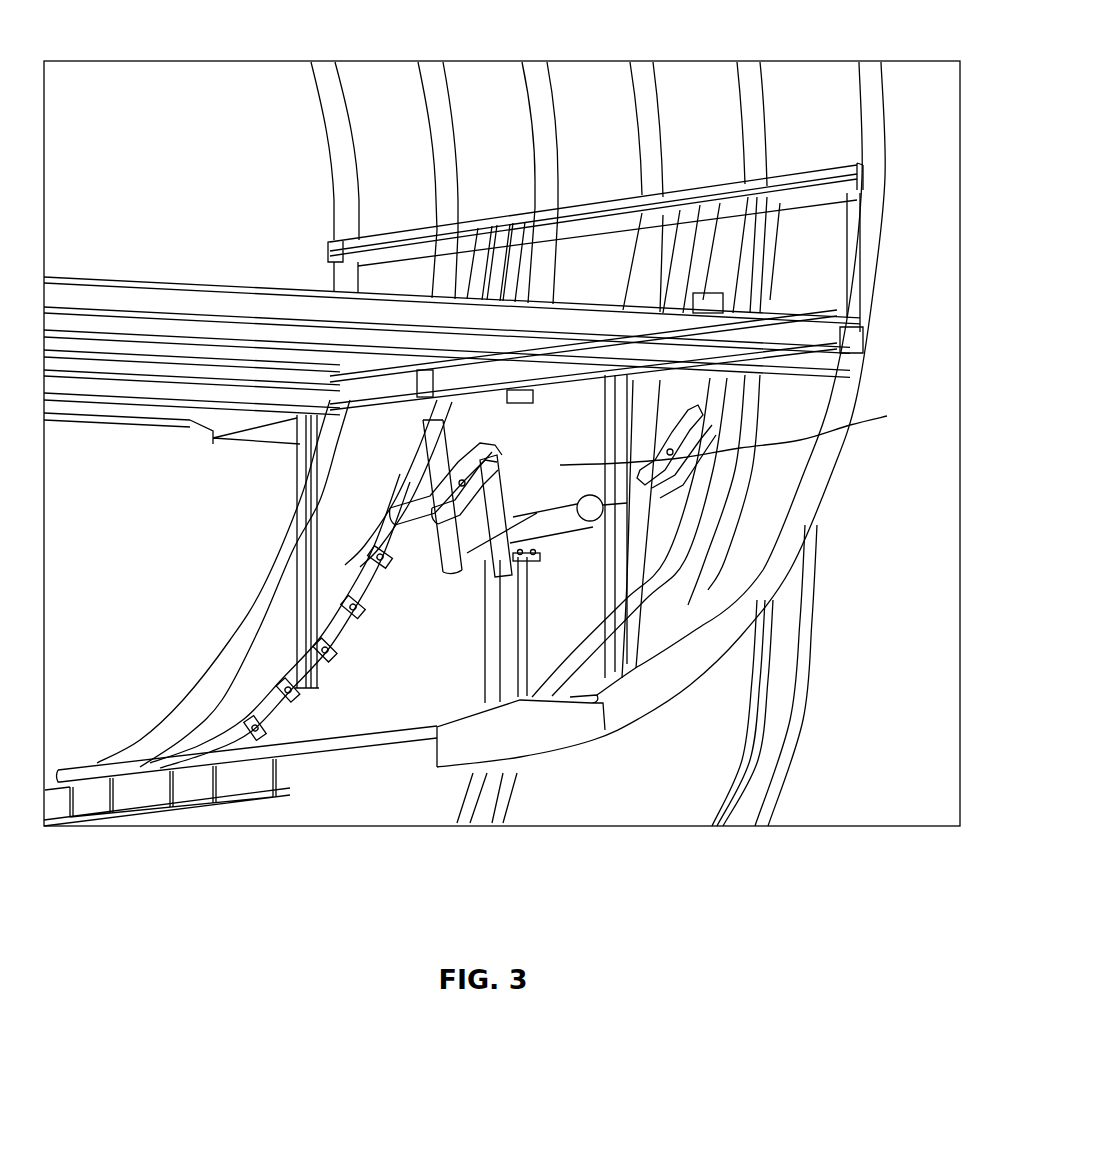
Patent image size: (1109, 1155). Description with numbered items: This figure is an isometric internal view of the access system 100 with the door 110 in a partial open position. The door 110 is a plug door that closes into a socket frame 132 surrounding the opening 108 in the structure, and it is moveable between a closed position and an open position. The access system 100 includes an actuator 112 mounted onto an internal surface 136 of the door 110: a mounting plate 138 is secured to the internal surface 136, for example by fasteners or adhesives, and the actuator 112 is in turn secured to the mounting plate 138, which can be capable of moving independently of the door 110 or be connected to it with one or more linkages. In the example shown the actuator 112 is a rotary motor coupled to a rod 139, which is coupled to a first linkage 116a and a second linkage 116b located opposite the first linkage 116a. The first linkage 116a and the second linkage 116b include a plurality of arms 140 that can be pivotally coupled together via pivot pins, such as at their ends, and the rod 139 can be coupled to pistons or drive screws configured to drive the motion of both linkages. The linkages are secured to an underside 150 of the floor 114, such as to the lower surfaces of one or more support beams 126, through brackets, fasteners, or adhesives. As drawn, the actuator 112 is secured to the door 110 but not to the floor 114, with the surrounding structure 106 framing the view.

The access system 100 is at (222, 607).
The fuselage frame 106 is at (878, 100).
The opening 108 is at (345, 710).
The door 110 is at (732, 671).
The actuator 112 is at (593, 527).
The floor 114 is at (205, 292).
The first linkage 116a is at (391, 514).
The second linkage 116b is at (745, 425).
The support beams 126 is at (437, 382).
The socket frame 132 is at (751, 433).
The internal surface 136 is at (588, 594).
The mounting plate 138 is at (713, 397).
The rod 139 is at (523, 552).
The arms 140 is at (490, 452).
The underside 150 is at (198, 436).